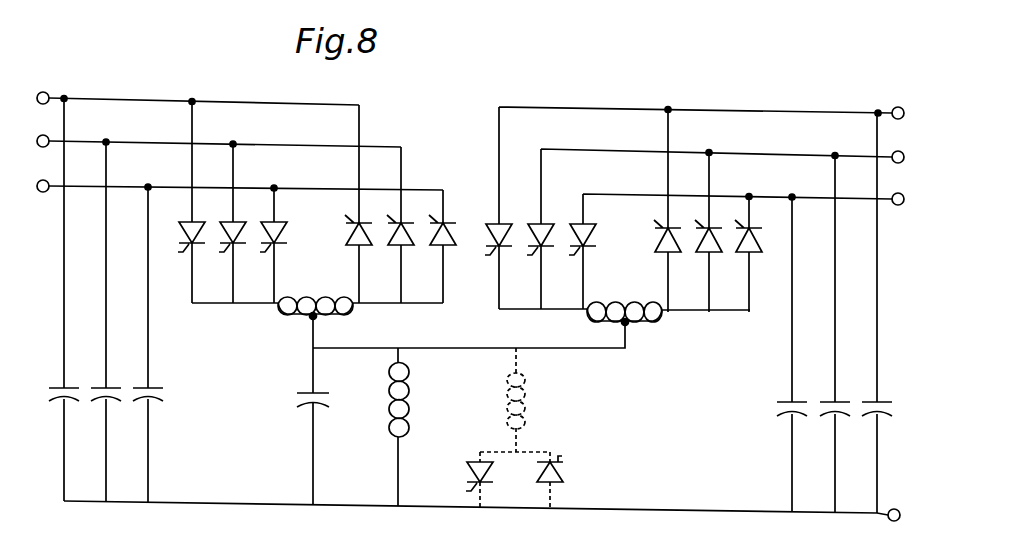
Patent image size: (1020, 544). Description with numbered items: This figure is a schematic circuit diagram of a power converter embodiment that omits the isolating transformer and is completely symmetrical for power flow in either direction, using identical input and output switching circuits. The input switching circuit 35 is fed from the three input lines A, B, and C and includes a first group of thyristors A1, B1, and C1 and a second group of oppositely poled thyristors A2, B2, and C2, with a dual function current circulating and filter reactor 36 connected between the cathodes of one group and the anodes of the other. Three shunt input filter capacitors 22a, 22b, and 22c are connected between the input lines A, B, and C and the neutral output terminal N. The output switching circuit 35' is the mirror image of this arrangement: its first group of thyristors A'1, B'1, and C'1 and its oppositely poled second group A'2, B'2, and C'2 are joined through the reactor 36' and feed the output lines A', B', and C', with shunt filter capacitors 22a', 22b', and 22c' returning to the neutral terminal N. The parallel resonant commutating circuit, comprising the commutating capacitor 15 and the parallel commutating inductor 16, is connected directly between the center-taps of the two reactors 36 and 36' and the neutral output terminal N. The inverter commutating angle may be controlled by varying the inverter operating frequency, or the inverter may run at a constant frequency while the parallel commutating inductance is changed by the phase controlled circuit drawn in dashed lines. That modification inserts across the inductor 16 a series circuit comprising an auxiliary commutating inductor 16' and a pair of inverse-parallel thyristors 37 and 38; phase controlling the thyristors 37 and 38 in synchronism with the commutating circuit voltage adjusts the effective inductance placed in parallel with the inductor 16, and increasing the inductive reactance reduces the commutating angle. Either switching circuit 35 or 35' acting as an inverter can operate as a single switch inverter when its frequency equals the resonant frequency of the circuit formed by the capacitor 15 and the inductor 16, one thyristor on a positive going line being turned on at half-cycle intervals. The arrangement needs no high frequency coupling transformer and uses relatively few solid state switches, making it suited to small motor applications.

The input line A is at (198, 90).
The input line B is at (217, 156).
The input line C is at (238, 201).
The output line A' is at (701, 154).
The output line B' is at (722, 186).
The output line C' is at (743, 218).
The neutral output terminal N is at (883, 507).
The thyristor A1 is at (180, 249).
The thyristor B1 is at (221, 249).
The thyristor C1 is at (263, 249).
The oppositely poled thyristor A2 is at (348, 249).
The oppositely poled thyristor B2 is at (390, 249).
The oppositely poled thyristor C2 is at (431, 249).
The thyristor A'1 is at (488, 252).
The thyristor B'1 is at (530, 252).
The thyristor C'1 is at (571, 252).
The oppositely poled thyristor A'2 is at (675, 258).
The oppositely poled thyristor B'2 is at (717, 258).
The oppositely poled thyristor C'2 is at (758, 260).
The commutating capacitor 15 is at (307, 402).
The parallel commutating inductor 16 is at (416, 427).
The auxiliary commutating inductor 16' is at (526, 400).
The shunt input filter capacitor 22a is at (52, 299).
The shunt input filter capacitor 22b is at (93, 322).
The shunt input filter capacitor 22c is at (135, 345).
The shunt filter capacitor 22a' is at (775, 354).
The shunt filter capacitor 22b' is at (823, 332).
The shunt filter capacitor 22c' is at (865, 311).
The input switching circuit 35 is at (317, 336).
The current circulating and filter reactor 36 is at (308, 327).
The output switching circuit 35' is at (624, 332).
The current circulating and filter reactor 36' is at (628, 332).
The thyristor 37 is at (472, 472).
The thyristor 38 is at (562, 478).